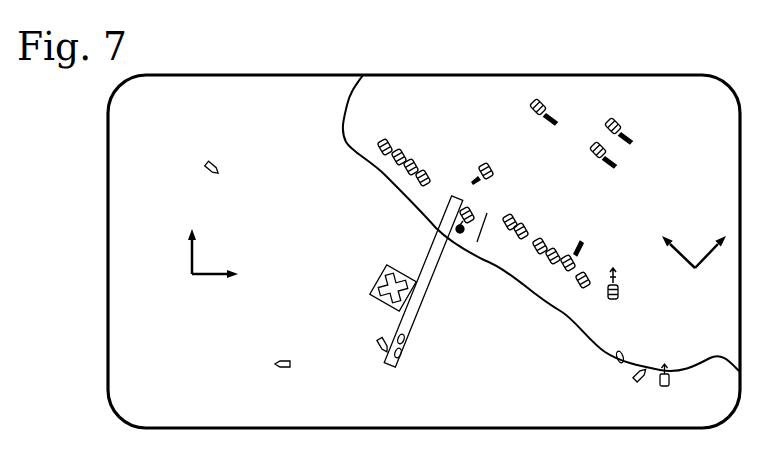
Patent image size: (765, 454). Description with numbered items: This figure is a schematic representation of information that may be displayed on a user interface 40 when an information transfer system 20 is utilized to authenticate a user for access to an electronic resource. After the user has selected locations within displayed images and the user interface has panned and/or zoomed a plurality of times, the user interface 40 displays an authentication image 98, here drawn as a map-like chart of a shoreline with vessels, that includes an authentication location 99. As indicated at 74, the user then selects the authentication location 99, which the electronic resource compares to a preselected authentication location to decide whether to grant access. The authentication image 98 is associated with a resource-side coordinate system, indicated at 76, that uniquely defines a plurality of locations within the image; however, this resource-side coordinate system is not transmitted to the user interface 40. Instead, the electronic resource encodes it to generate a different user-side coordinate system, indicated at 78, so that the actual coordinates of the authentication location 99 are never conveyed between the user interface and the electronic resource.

The information transfer system 20 is at (428, 66).
The user interface 40 is at (462, 72).
The authentication image 98 is at (588, 93).
The user selection of authentication location 74 is at (377, 291).
The authentication location 99 is at (363, 290).
The resource-side coordinate system 76 is at (200, 278).
The user-side coordinate system 78 is at (695, 270).